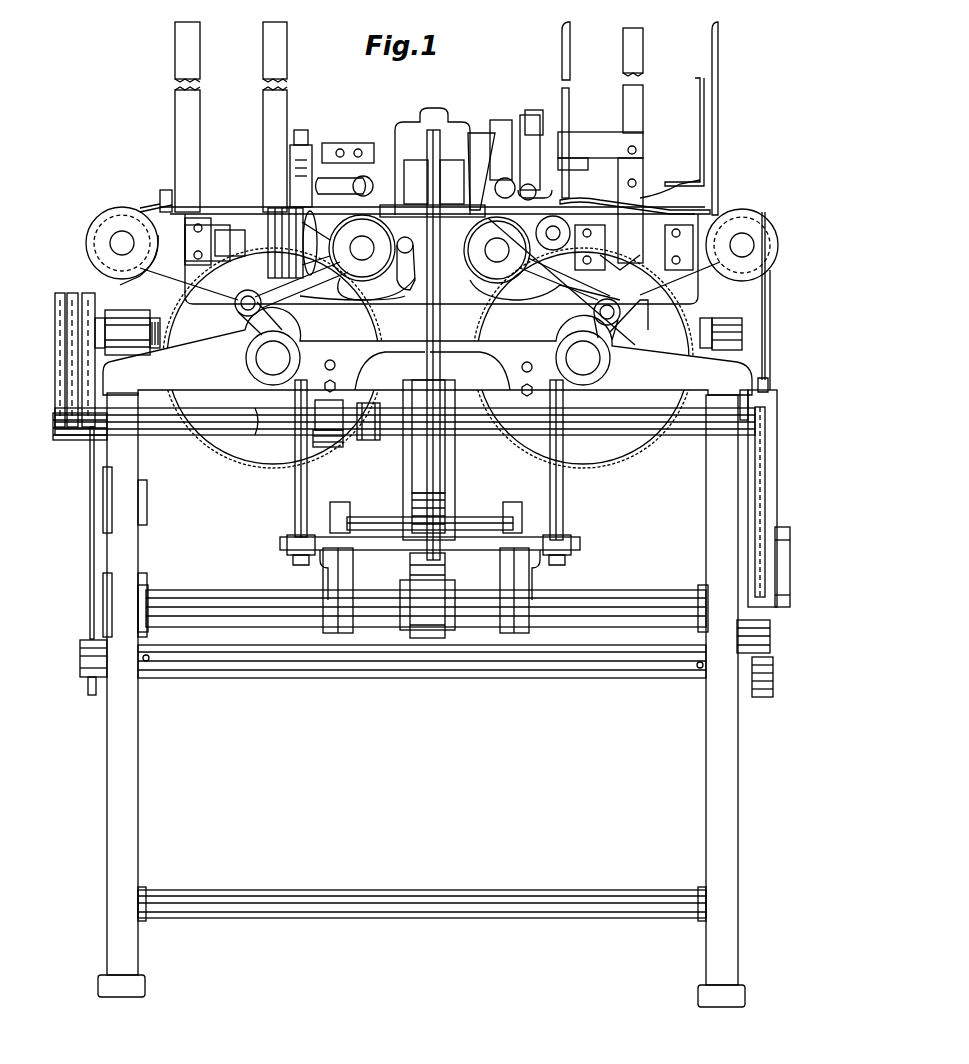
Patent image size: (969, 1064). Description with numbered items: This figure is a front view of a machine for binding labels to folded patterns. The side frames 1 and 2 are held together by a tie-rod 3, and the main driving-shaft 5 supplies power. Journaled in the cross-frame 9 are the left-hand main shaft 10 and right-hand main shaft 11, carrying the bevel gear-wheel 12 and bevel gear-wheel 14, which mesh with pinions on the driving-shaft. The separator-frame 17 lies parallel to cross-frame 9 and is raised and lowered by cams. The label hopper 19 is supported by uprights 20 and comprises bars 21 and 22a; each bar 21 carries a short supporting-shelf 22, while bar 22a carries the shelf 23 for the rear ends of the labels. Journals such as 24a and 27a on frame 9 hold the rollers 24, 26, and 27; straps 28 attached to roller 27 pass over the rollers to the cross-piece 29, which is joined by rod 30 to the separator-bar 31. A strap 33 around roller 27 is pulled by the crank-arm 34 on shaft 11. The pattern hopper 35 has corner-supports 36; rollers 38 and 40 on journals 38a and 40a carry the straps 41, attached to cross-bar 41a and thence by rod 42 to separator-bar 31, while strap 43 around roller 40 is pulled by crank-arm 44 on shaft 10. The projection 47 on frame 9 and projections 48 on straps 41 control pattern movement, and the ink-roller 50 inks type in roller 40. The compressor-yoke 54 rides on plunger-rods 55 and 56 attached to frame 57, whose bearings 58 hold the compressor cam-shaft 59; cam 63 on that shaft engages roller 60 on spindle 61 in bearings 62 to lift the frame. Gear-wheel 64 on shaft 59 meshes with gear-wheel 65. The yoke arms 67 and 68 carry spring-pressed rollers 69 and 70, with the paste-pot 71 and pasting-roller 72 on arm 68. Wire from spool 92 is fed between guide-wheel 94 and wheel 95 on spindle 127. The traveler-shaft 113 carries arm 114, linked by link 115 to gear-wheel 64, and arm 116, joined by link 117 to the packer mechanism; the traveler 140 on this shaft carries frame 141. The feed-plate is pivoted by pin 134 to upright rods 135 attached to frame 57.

The side frame 1 is at (728, 785).
The side frame 2 is at (128, 778).
The tie-rod 3 is at (420, 890).
The main driving-shaft 5 is at (155, 332).
The cross-frame 9 is at (430, 298).
The left-hand main shaft 10 is at (273, 358).
The right-hand main shaft 11 is at (583, 358).
The bevel gear-wheel 12 is at (273, 358).
The bevel gear-wheel 14 is at (583, 358).
The separator-frame 17 is at (432, 269).
The hopper 19 is at (647, 80).
The upright 20 is at (643, 128).
The bar 21 is at (566, 95).
The supporting-shelf 22 is at (575, 200).
The bar 22a is at (715, 70).
The shelf 23 is at (695, 140).
The roller 24 is at (742, 245).
The journal 24a is at (756, 247).
The roller 26 is at (553, 232).
The roller 27 is at (497, 250).
The journal 27a is at (497, 250).
The strap 28 is at (660, 200).
The cross-piece 29 is at (770, 380).
The rod 30 is at (772, 640).
The separator-bar 31 is at (302, 660).
The strap 33 is at (479, 286).
The crank-arm 34 is at (614, 330).
The hopper 35 is at (204, 117).
The corner-support 36 is at (190, 162).
The roller 38 is at (122, 243).
The journal 38a is at (112, 242).
The roller 40 is at (362, 248).
The journal 40a is at (362, 249).
The strap 41 is at (93, 268).
The cross-bar 41a is at (427, 351).
The rod 42 is at (90, 572).
The strap 43 is at (301, 294).
The crank-arm 44 is at (247, 333).
The projection 47 is at (162, 186).
The projection 48 is at (140, 205).
The ink-roller 50 is at (402, 263).
The compressor-yoke 54 is at (483, 130).
The compressor plunger-rod 55 is at (292, 184).
The compressor plunger-rod 56 is at (590, 196).
The frame 57 is at (378, 550).
The bearing 58 is at (352, 625).
The compressor cam-shaft 59 is at (645, 600).
The roller 60 is at (428, 492).
The spindle 61 is at (368, 517).
The bearing 62 is at (528, 510).
The cam 63 is at (430, 582).
The gear-wheel 64 is at (775, 695).
The gear-wheel 65 is at (778, 452).
The arm 67 is at (330, 143).
The arm 68 is at (532, 110).
The spring-pressed roller 69 is at (366, 178).
The spring-pressed roller 70 is at (500, 118).
The paste-pot 71 is at (517, 156).
The pasting-roller 72 is at (526, 173).
The spool 92 is at (244, 285).
The grooved guide-wheel 94 is at (398, 243).
The wheel 95 is at (391, 243).
The traveler-shaft 113 is at (698, 438).
The arm 114 is at (775, 500).
The link 115 is at (790, 580).
The arm 116 is at (80, 375).
The link 117 is at (58, 360).
The spindle 127 is at (340, 448).
The pin 134 is at (455, 160).
The upright rod 135 is at (462, 475).
The traveler 140 is at (428, 300).
The frame 141 is at (410, 160).